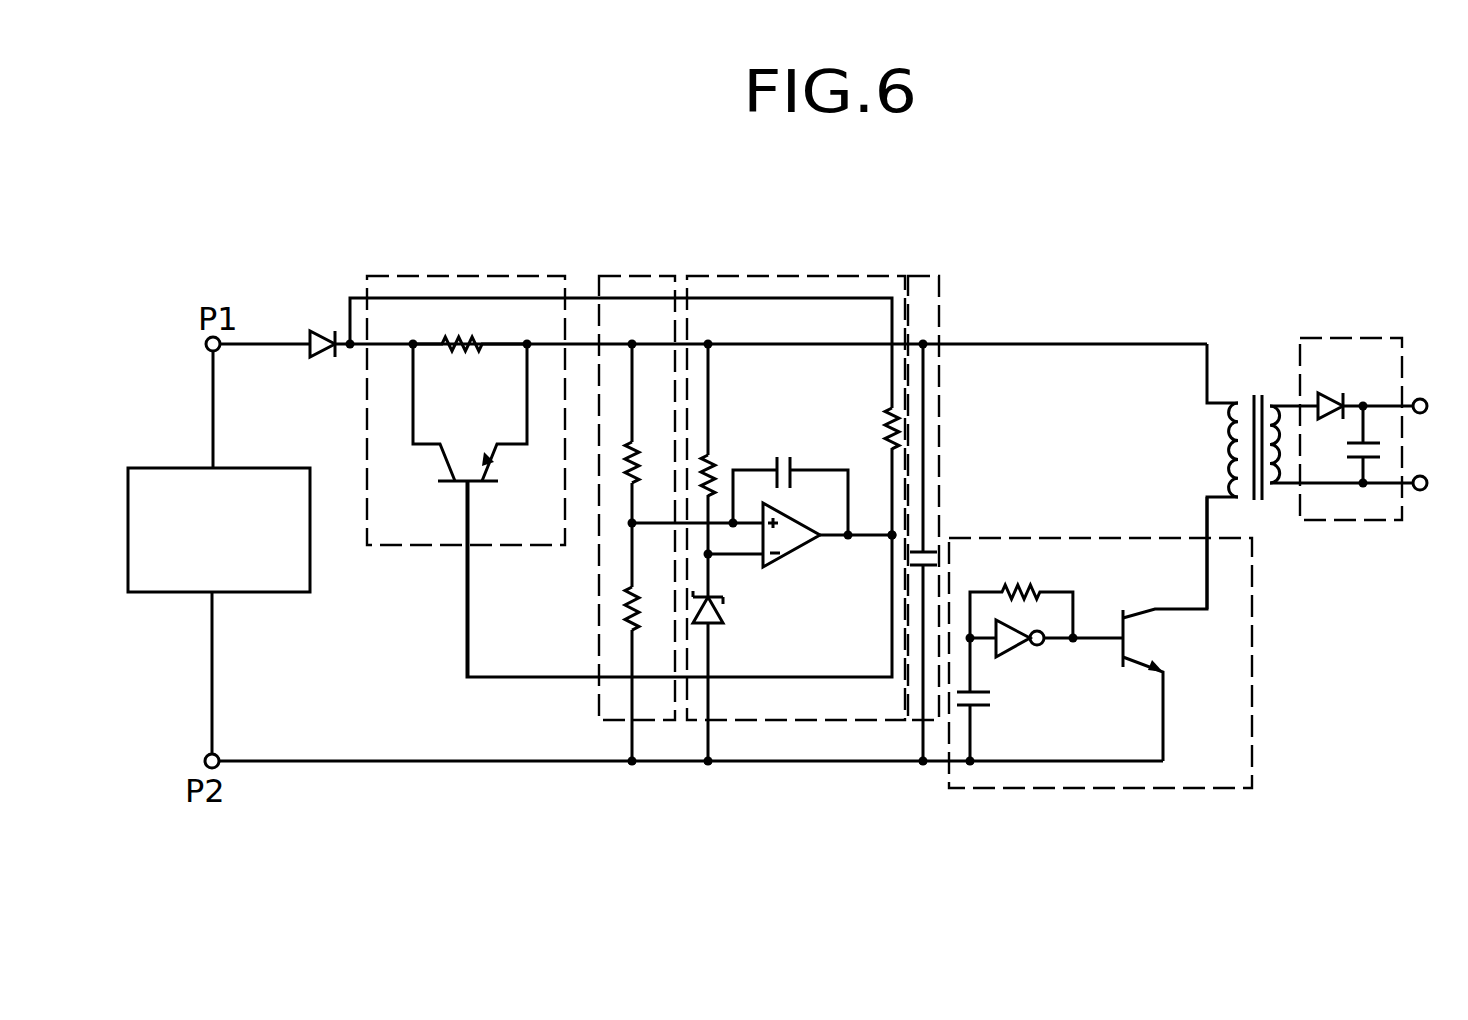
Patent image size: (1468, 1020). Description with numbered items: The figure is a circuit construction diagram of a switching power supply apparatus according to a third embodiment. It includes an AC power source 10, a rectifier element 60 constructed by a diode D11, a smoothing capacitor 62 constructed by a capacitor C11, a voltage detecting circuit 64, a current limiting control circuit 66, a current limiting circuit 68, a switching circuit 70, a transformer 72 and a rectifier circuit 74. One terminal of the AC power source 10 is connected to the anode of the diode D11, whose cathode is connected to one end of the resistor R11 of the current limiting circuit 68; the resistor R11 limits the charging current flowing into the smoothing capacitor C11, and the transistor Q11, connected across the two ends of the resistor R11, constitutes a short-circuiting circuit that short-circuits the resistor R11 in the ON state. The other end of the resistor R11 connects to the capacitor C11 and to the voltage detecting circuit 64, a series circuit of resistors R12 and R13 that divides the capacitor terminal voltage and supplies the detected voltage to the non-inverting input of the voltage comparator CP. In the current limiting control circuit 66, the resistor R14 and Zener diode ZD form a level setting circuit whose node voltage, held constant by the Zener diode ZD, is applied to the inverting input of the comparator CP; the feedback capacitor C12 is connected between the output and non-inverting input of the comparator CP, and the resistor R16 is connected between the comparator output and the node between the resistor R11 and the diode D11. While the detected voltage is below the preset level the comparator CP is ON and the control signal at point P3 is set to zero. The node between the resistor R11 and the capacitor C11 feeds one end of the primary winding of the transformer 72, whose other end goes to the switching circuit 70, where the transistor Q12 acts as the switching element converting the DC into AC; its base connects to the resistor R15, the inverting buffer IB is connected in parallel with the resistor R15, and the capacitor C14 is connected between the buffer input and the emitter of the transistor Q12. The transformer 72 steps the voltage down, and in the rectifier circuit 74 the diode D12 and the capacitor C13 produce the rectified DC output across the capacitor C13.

The AC power source 10 is at (253, 468).
The rectifier element 60 is at (320, 322).
The smoothing capacitor 62 is at (970, 498).
The voltage detecting circuit 64 is at (710, 463).
The current limiting control circuit 66 is at (982, 438).
The current limiting circuit 68 is at (512, 423).
The switching circuit 70 is at (1083, 676).
The transformer 72 is at (1258, 392).
The rectifier circuit 74 is at (1384, 390).
The diode D11 is at (330, 364).
The diode D12 is at (1361, 388).
The resistor R11 is at (470, 324).
The resistor R12 is at (625, 452).
The resistor R13 is at (623, 608).
The resistor R14 is at (720, 463).
The resistor R15 is at (1021, 594).
The resistor R16 is at (887, 430).
The transistor Q11 is at (438, 470).
The transistor Q12 is at (1175, 629).
The capacitor C11 is at (940, 552).
The feedback capacitor C12 is at (790, 477).
The capacitor C13 is at (1407, 444).
The capacitor C14 is at (1001, 699).
The voltage comparator CP is at (793, 558).
The Zener diode ZD is at (732, 626).
The inverting buffer IB is at (1012, 648).
The point P3 is at (888, 540).